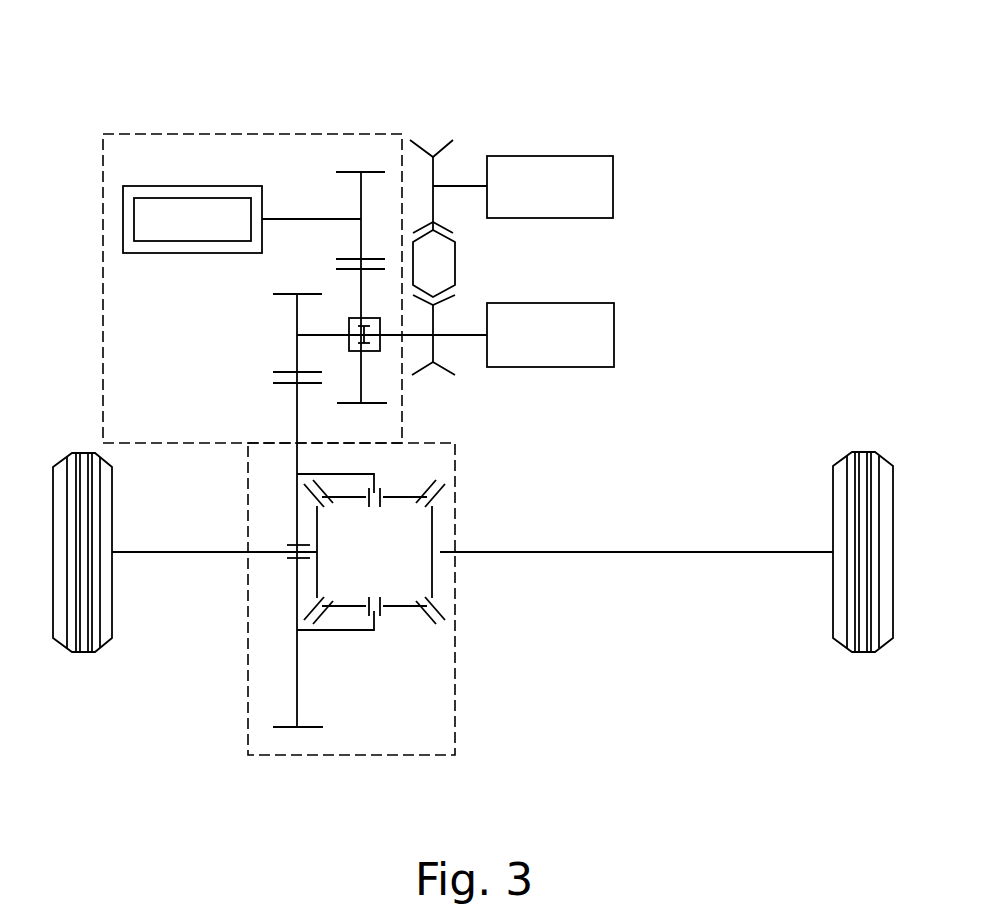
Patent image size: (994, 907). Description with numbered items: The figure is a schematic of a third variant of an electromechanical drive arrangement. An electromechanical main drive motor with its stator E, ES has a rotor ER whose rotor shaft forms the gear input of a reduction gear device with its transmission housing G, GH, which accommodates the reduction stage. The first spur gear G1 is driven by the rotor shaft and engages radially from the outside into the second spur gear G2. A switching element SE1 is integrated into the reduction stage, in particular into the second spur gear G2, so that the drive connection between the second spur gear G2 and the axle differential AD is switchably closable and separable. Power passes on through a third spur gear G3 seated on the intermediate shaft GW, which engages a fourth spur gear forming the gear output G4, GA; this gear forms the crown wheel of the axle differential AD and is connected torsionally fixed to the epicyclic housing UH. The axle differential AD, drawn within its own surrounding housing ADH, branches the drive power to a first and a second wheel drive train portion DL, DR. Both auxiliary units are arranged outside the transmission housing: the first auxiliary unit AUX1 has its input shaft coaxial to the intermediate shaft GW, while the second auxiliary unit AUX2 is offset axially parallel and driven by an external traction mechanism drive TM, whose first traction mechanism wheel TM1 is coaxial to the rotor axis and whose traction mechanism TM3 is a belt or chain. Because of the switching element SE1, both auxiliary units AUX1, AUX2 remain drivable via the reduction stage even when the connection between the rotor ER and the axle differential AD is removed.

The electric machine / electric drive source E, ES is at (137, 186).
The rotor ER is at (196, 198).
The first spur gear G1 is at (370, 170).
The switching element SE1 is at (364, 259).
The second spur gear G2 is at (367, 404).
The third spur gear G3 is at (272, 297).
The intermediate shaft GW is at (317, 337).
The fourth gear; output gear G4, GA is at (310, 728).
The transmission; transmission housing G, GH is at (173, 443).
The traction mechanism drive TM is at (468, 235).
The first traction mechanism wheel TM1 is at (443, 138).
The traction mechanism TM3 is at (440, 257).
The first auxiliary unit AUX1 is at (550, 335).
The second auxiliary unit AUX2 is at (550, 187).
The axle differential AD is at (412, 625).
The epicyclic housing UH is at (352, 631).
The axle drive housing ADH is at (457, 742).
The first wheel drive train portion DL is at (160, 553).
The second wheel drive train portion DR is at (778, 553).